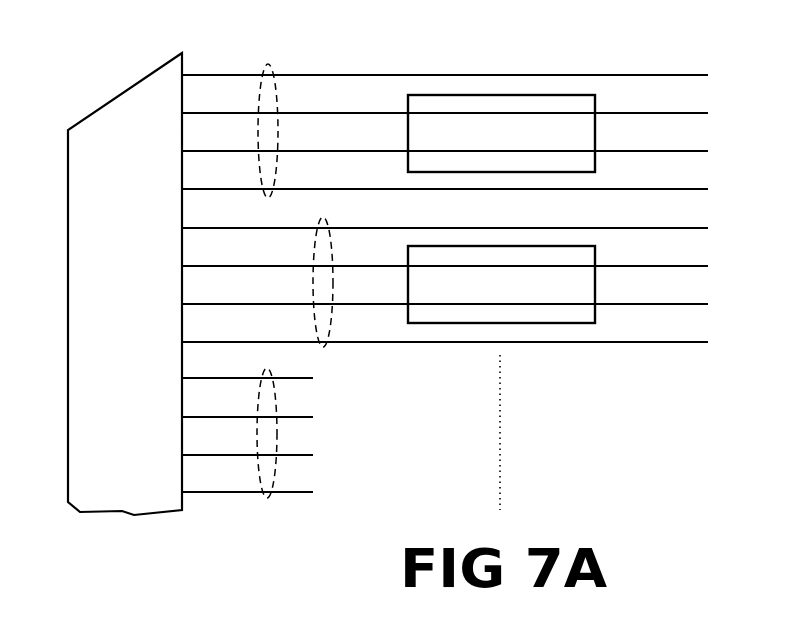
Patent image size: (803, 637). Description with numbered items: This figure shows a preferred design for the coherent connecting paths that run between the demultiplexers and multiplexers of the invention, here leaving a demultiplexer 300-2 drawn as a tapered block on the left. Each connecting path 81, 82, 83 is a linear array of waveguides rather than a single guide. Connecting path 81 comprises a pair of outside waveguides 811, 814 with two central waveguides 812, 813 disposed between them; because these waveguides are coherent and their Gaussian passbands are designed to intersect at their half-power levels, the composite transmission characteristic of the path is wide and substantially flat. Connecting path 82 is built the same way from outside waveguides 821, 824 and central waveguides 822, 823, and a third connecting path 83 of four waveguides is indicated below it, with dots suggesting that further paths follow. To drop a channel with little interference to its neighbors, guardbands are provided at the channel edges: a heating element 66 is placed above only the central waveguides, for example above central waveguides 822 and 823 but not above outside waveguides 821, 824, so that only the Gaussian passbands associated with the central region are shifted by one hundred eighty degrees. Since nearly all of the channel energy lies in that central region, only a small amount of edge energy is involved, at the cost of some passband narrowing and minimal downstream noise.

The demultiplexer 300-2 is at (125, 92).
The heating element 66 is at (558, 95).
The connecting path 81 is at (268, 64).
The connecting path 82 is at (321, 347).
The third group of output lines 83 is at (263, 498).
The outside waveguide 811 is at (708, 75).
The central waveguide 812 is at (708, 113).
The central waveguide 813 is at (708, 151).
The outside waveguide 814 is at (708, 189).
The outside waveguide 821 is at (708, 228).
The central waveguide 822 is at (708, 266).
The central waveguide 823 is at (708, 304).
The outside waveguide 824 is at (708, 342).